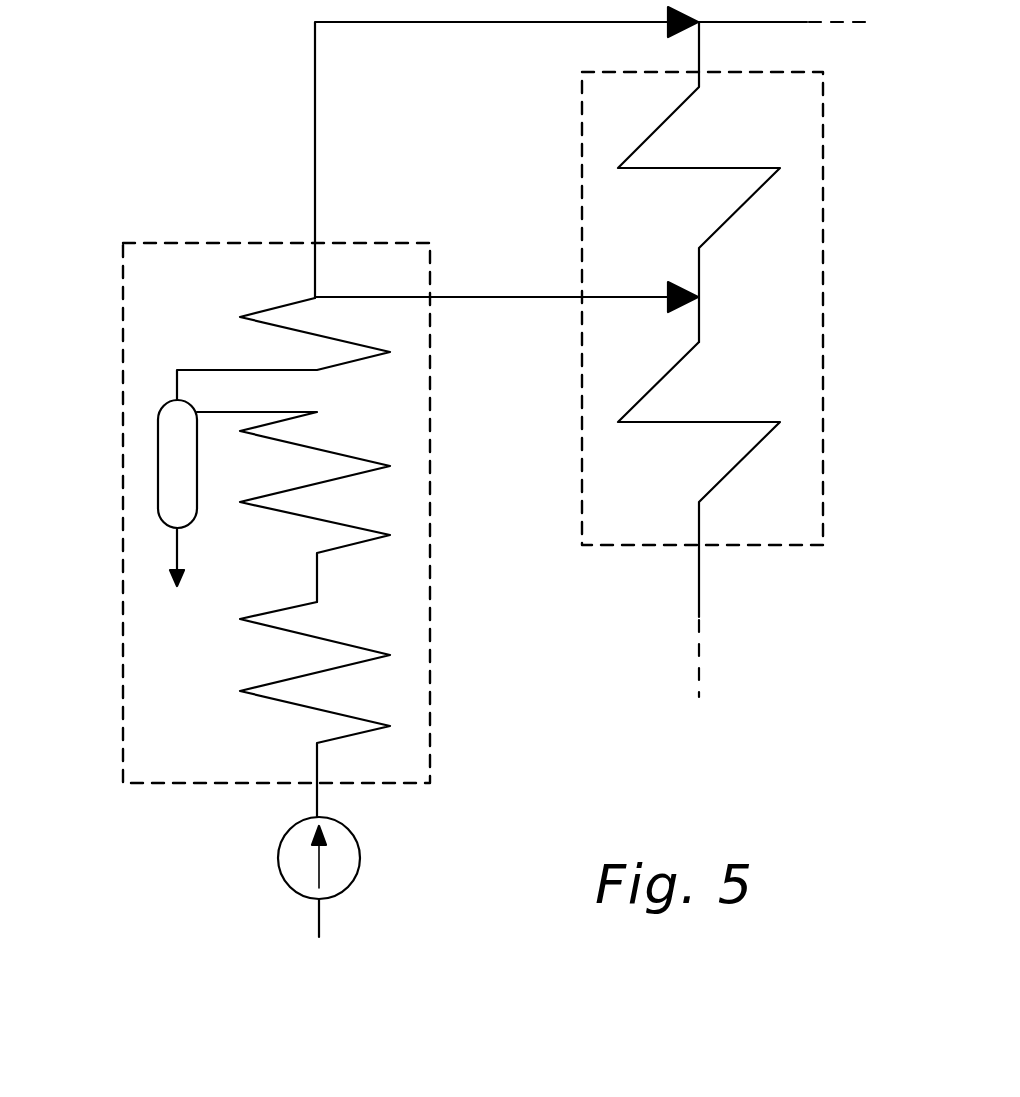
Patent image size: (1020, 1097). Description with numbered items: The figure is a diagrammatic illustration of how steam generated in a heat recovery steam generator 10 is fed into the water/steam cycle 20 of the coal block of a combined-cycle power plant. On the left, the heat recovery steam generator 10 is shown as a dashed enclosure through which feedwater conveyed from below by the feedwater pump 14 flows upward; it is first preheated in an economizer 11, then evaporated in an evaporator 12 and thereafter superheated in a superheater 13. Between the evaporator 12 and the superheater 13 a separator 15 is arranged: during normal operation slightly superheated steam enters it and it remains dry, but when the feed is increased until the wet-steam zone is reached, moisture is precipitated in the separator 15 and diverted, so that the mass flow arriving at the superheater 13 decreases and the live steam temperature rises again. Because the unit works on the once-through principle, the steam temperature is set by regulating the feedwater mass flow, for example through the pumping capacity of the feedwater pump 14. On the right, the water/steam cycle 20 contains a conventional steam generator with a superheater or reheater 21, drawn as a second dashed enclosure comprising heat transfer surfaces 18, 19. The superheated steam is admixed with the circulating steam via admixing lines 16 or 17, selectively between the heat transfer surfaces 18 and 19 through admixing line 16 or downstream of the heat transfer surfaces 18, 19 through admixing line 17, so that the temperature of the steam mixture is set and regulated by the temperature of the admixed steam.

The heat recovery steam generator 10 is at (428, 613).
The economizer 11 is at (240, 691).
The evaporator 12 is at (390, 463).
The superheater 13 is at (240, 317).
The feedwater pump 14 is at (286, 876).
The separator 15 is at (166, 496).
The admixing line 16 is at (510, 297).
The admixing line 17 is at (516, 22).
The heat transfer surface 18 is at (780, 168).
The heat transfer surface 19 is at (780, 422).
The water/steam cycle 20 is at (702, 590).
The superheater or reheater 21 is at (825, 440).